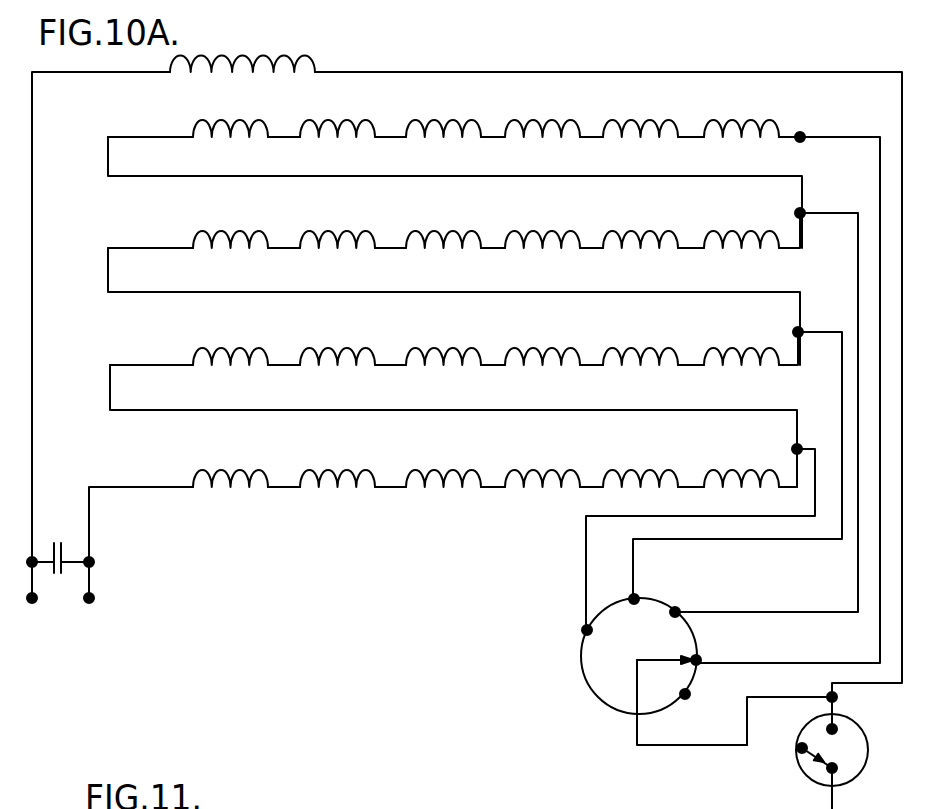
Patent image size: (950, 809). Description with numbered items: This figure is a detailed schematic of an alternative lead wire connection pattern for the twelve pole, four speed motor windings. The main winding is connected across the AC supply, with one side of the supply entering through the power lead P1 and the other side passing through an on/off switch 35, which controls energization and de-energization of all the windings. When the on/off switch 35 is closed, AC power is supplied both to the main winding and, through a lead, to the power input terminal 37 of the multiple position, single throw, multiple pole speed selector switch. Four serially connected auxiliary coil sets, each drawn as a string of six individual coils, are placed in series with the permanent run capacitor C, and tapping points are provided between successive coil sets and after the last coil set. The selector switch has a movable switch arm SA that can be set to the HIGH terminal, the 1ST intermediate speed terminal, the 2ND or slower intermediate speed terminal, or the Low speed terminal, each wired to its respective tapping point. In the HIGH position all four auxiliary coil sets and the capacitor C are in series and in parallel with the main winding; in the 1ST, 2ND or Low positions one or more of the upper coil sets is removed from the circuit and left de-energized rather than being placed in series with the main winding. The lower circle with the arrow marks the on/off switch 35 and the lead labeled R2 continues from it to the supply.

The permanent run capacitor C is at (60, 570).
The power lead P1 is at (60, 597).
The second intermediate speed terminal 2ND is at (649, 587).
The first intermediate speed terminal 1ST is at (692, 602).
The low speed terminal Low is at (563, 633).
The high speed terminal HIGH is at (721, 653).
The switch arm SA is at (657, 661).
The power input terminal 37 is at (637, 716).
The on/off switch 35 is at (808, 791).
The lead to reversing relay R2 is at (853, 788).